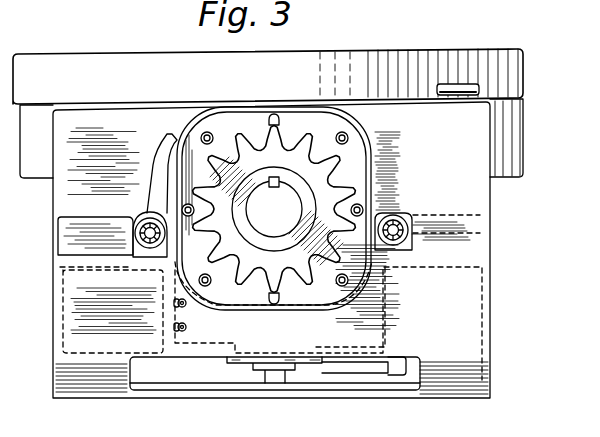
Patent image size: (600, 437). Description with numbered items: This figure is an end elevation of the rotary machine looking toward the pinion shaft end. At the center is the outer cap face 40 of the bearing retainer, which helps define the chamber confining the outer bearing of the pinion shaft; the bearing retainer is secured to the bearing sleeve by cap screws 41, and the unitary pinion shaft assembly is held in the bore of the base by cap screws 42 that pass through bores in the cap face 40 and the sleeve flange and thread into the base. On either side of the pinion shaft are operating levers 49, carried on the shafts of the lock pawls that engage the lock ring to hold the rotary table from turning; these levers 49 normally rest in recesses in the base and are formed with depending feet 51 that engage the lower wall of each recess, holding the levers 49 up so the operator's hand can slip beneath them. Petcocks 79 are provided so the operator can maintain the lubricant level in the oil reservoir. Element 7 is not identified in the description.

The machine body 7 is at (271, 248).
The outer cap face 40 is at (332, 147).
The cap screws 41 is at (275, 113).
The cap screws 42 is at (204, 275).
The operating levers 49 is at (175, 138).
The depending feet 51 is at (153, 151).
The petcocks 79 is at (186, 326).